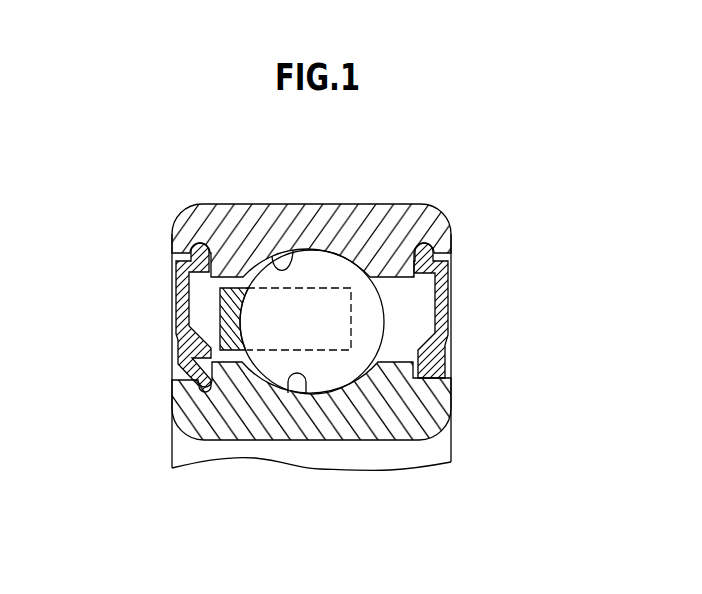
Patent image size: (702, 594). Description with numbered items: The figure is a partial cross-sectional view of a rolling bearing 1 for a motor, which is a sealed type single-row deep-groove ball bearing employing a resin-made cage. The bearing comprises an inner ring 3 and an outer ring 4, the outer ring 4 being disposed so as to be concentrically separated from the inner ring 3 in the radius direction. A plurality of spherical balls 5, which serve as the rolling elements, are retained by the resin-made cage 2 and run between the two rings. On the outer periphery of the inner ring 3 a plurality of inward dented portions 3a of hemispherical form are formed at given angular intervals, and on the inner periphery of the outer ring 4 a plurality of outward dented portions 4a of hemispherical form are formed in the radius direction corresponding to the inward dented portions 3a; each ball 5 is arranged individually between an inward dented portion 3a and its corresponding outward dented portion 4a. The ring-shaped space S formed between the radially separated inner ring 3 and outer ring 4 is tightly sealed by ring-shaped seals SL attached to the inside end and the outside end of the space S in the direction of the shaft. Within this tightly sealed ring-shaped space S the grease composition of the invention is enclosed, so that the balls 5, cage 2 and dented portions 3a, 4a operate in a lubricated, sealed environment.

The rolling bearing 1 is at (439, 190).
The resin-made cage 2 is at (227, 315).
The inner ring 3 is at (423, 413).
The inward dented portion 3a is at (312, 380).
The outer ring 4 is at (418, 226).
The outward dented portion 4a is at (275, 253).
The ball 5 is at (315, 275).
The ring-shaped space S is at (402, 317).
The ring-shaped seal SL is at (172, 275).